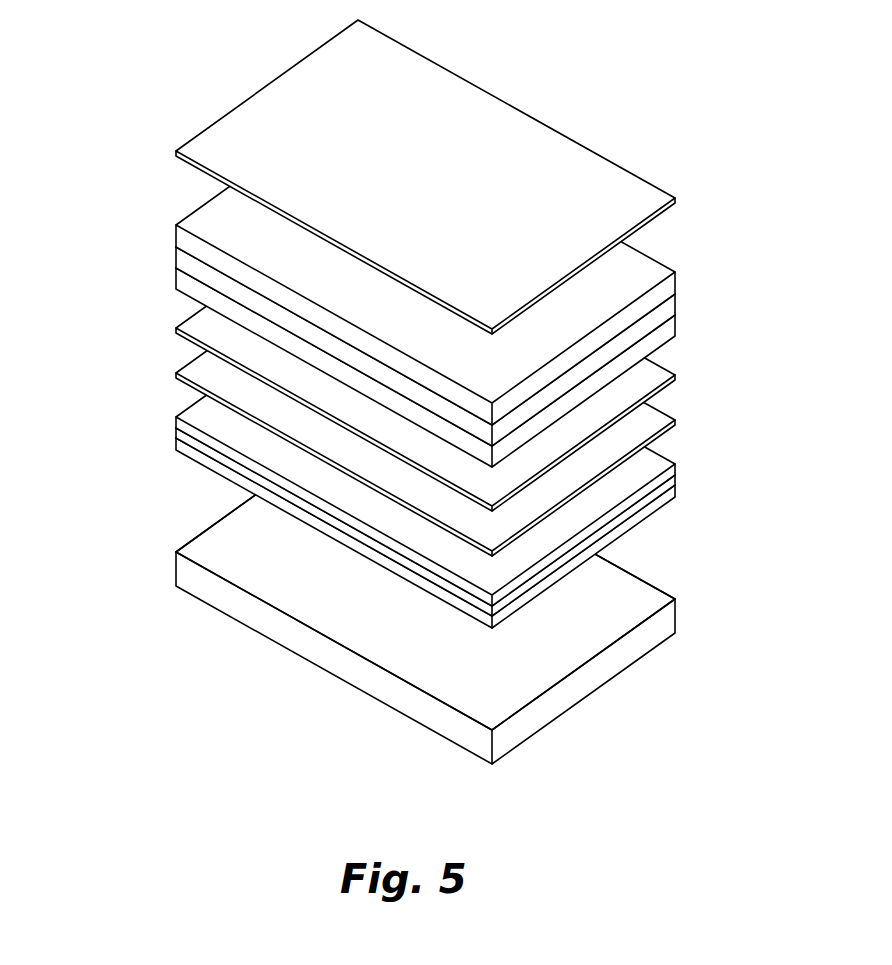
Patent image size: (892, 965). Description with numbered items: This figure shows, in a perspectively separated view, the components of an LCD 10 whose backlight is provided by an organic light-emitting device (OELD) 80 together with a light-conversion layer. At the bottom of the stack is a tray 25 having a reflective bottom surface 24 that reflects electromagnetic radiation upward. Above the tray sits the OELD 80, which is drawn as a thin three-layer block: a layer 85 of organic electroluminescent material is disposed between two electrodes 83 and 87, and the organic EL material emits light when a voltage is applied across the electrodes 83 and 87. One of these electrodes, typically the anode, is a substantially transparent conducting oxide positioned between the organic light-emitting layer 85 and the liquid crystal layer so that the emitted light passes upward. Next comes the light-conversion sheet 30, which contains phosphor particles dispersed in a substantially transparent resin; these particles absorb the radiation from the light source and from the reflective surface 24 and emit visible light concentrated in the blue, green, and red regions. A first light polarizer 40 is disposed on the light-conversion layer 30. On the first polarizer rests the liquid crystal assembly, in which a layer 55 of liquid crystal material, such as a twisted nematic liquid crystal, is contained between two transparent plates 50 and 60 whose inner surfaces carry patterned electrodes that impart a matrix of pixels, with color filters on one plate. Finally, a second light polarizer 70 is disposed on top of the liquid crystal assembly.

The LCD 10 is at (439, 392).
The second light polarizer 70 is at (176, 151).
The transparent plate 60 is at (176, 229).
The layer of liquid crystal material 55 is at (176, 255).
The transparent plate 50 is at (176, 278).
The first light polarizer 40 is at (176, 330).
The light-conversion sheet 30 is at (176, 375).
The organic light-emitting device 80 is at (495, 457).
The electrode 87 is at (678, 467).
The layer of organic electroluminescent material 85 is at (680, 474).
The electrode 83 is at (680, 483).
The reflective bottom surface 24 is at (575, 647).
The tray 25 is at (538, 730).